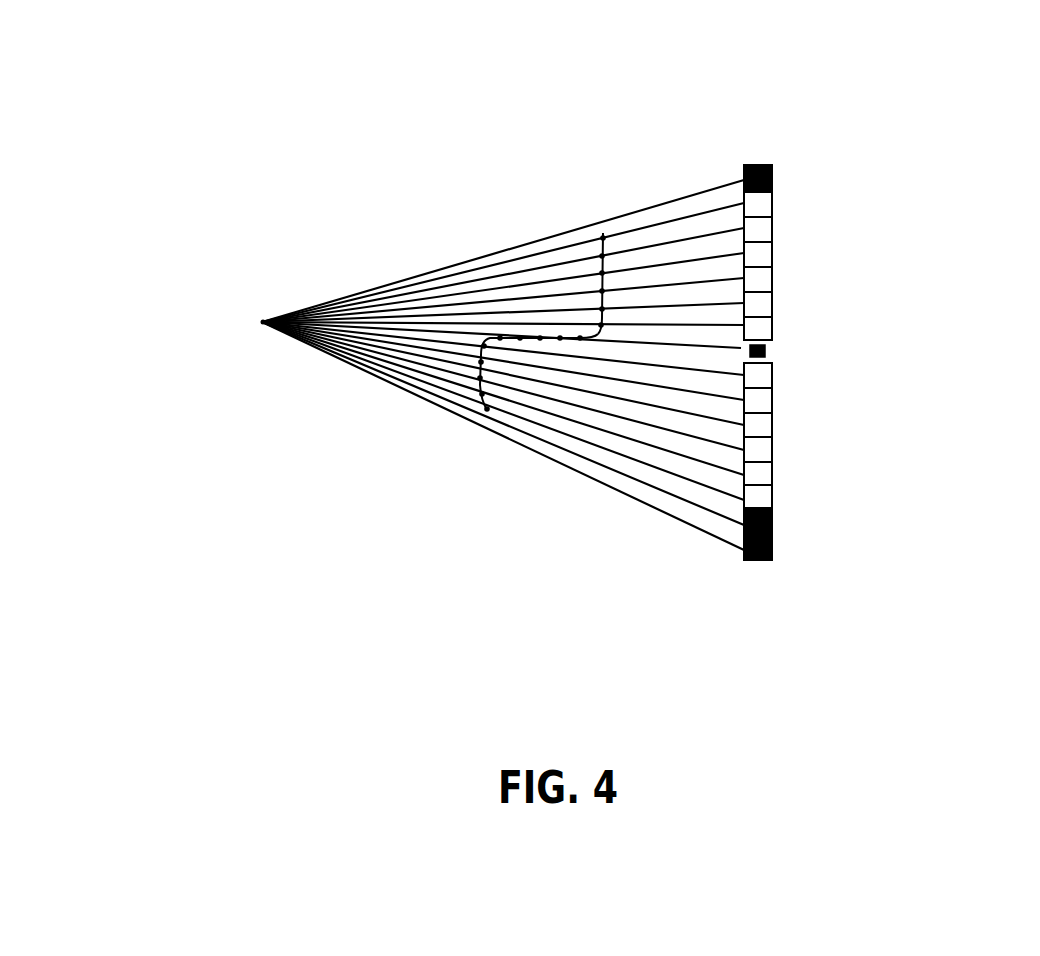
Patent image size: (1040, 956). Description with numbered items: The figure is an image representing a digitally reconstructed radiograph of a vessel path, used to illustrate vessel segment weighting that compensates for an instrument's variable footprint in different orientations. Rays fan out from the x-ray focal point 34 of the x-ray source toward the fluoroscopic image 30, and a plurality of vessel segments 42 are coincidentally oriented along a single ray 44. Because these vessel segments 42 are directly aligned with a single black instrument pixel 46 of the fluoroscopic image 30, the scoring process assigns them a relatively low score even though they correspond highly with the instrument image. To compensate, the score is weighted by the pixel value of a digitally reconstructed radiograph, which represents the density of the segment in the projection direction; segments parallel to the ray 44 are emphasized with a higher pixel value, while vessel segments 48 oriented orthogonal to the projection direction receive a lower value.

The fluoroscopic image 30 is at (775, 230).
The x-ray focal point 34 is at (264, 320).
The vessel segments 42 is at (512, 336).
The ray 44 is at (710, 351).
The black instrument pixel 46 is at (800, 351).
The vessel segments oriented orthogonal to the projection direction 48 is at (603, 233).